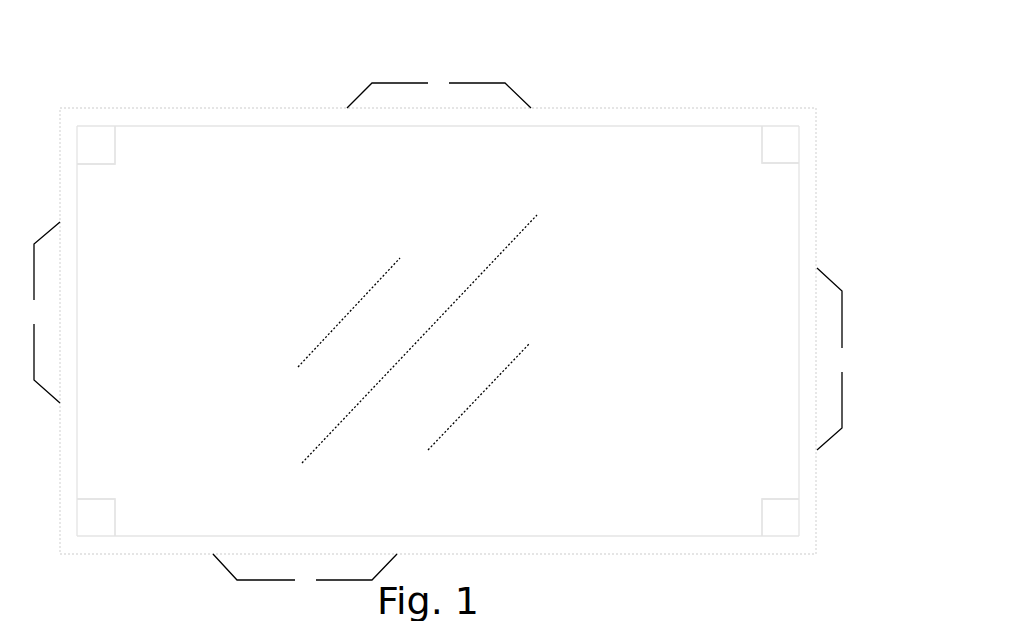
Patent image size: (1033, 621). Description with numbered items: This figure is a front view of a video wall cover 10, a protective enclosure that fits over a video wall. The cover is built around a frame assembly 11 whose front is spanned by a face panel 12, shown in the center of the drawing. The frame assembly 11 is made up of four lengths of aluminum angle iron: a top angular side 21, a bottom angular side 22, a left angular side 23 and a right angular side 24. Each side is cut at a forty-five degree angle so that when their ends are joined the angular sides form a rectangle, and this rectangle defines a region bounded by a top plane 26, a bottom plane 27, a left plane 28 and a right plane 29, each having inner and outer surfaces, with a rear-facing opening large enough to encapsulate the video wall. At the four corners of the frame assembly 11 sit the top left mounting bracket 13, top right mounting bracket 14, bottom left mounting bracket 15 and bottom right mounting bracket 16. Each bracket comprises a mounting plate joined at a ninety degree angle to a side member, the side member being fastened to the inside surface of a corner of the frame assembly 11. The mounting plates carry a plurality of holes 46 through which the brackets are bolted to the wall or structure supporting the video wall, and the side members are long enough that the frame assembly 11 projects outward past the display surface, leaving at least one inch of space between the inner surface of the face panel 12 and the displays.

The video wall cover 10 is at (703, 74).
The frame assembly 11 is at (794, 109).
The face panel 12 is at (515, 260).
The top left mounting bracket 13 is at (93, 152).
The top right mounting bracket 14 is at (783, 151).
The bottom left mounting bracket 15 is at (92, 512).
The bottom right mounting bracket 16 is at (785, 510).
The top angular side 21 is at (257, 119).
The bottom angular side 22 is at (158, 545).
The left angular side 23 is at (71, 187).
The right angular side 24 is at (805, 235).
The top plane 26 is at (439, 91).
The bottom plane 27 is at (305, 571).
The left plane 28 is at (42, 312).
The right plane 29 is at (834, 359).
The holes 46 is at (105, 154).